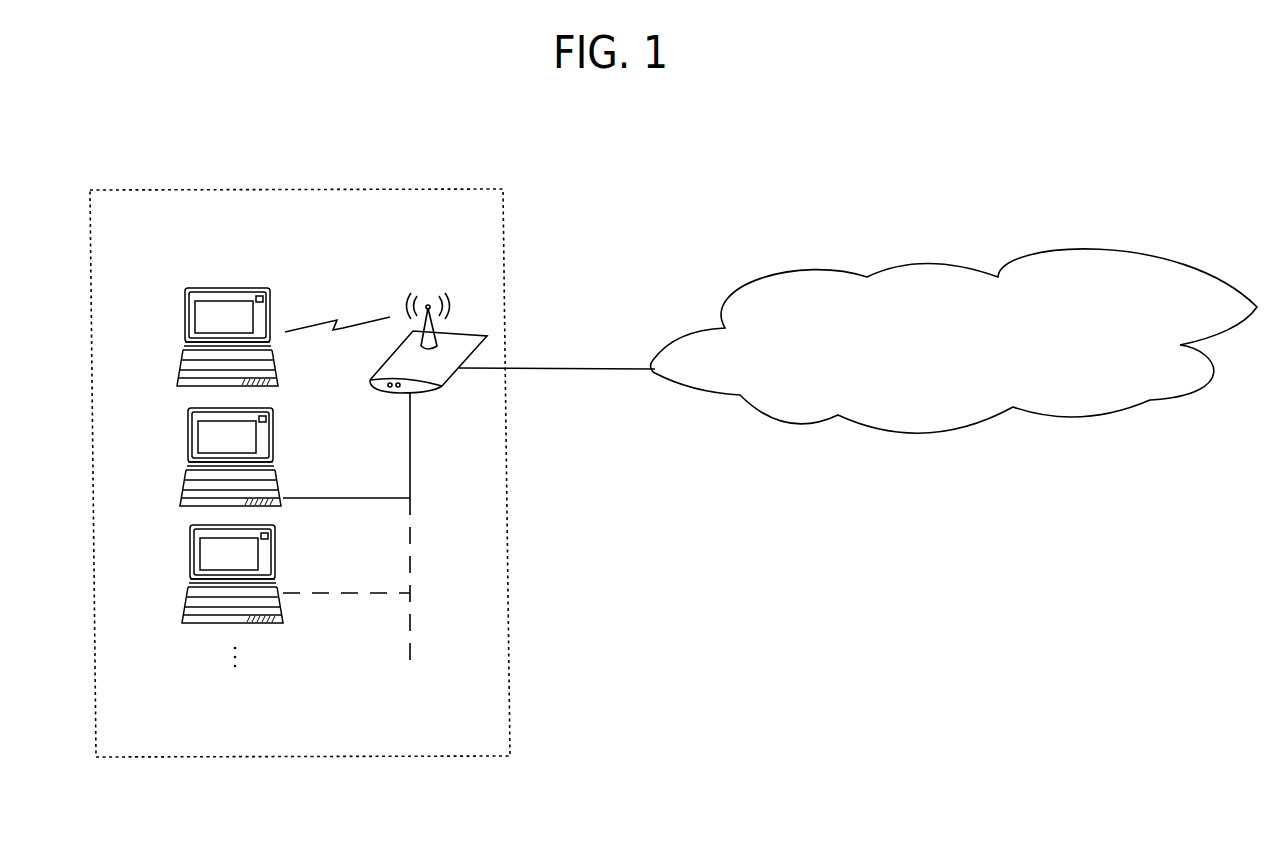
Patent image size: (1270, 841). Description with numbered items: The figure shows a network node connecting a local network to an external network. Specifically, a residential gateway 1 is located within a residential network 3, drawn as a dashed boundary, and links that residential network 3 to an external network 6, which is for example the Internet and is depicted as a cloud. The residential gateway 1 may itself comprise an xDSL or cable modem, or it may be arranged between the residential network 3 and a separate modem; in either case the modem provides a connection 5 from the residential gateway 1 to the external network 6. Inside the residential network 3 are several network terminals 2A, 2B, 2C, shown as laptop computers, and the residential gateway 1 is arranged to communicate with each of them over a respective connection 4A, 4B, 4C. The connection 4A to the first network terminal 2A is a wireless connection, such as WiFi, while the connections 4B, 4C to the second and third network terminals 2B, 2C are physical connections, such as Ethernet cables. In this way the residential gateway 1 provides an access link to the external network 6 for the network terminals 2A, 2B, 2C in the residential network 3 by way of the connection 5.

The residential gateway 1 is at (457, 325).
The network terminal 2A is at (184, 328).
The network terminal 2B is at (189, 450).
The network terminal 2C is at (189, 565).
The residential network 3 is at (273, 190).
The wireless connection 4A is at (318, 313).
The physical connection 4B is at (312, 497).
The physical connection 4C is at (312, 592).
The connection 5 is at (537, 369).
The external network 6 is at (777, 270).